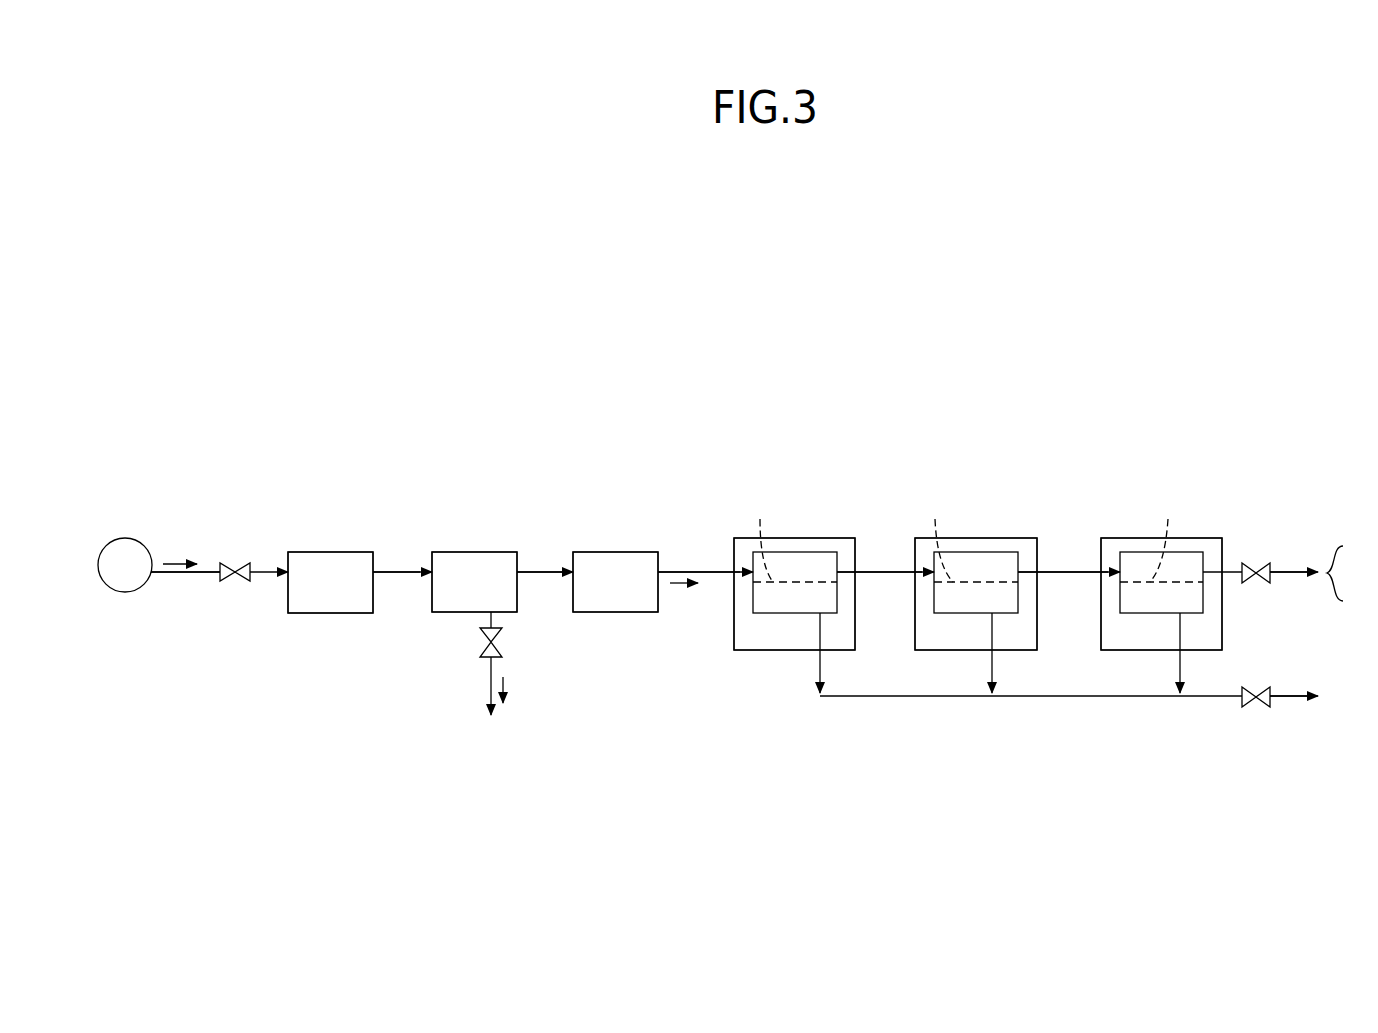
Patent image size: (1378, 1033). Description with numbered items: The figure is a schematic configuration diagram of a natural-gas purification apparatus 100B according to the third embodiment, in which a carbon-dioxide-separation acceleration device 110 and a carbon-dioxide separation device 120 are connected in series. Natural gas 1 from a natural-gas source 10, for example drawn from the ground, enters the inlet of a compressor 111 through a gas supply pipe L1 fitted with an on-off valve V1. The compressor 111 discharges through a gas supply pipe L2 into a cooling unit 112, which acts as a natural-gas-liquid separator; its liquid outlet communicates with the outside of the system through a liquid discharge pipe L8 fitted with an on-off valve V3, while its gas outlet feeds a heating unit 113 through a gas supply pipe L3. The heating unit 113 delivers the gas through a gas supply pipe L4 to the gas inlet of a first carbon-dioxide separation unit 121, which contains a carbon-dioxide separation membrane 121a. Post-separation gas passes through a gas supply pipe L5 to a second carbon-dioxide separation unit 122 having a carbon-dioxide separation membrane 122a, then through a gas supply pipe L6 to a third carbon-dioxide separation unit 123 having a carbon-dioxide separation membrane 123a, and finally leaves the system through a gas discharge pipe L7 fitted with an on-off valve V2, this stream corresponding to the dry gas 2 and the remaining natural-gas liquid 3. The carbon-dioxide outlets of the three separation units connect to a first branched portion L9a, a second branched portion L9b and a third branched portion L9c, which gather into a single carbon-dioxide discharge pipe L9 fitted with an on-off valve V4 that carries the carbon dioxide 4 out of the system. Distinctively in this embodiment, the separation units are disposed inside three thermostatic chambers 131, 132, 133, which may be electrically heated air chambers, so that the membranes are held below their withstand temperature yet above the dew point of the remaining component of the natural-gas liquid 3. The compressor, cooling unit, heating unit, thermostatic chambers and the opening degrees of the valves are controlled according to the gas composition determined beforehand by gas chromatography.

The natural-gas purification apparatus 100B is at (1205, 393).
The natural-gas source 10 is at (100, 550).
The natural gas 1 is at (127, 550).
The dry gas 2 is at (683, 590).
The natural-gas liquid 3 is at (507, 677).
The carbon dioxide 4 is at (1329, 700).
The carbon-dioxide-separation acceleration device 110 is at (522, 502).
The compressor 111 is at (335, 550).
The cooling unit 112 is at (482, 550).
The heating unit 113 is at (625, 550).
The carbon-dioxide separation device 120 is at (950, 452).
The first carbon-dioxide separation unit 121 is at (805, 552).
The carbon-dioxide separation membrane 121a is at (761, 539).
The second carbon-dioxide separation unit 122 is at (987, 552).
The carbon-dioxide separation membrane 122a is at (941, 539).
The third carbon-dioxide separation unit 123 is at (1135, 552).
The carbon-dioxide separation membrane 123a is at (1177, 539).
The thermostatic chamber 131 is at (837, 538).
The thermostatic chamber 132 is at (1038, 537).
The thermostatic chamber 133 is at (1213, 538).
The gas supply pipe L1 is at (212, 567).
The gas supply pipe L2 is at (400, 568).
The gas supply pipe L3 is at (550, 568).
The gas supply pipe L4 is at (697, 570).
The gas supply pipe L5 is at (883, 575).
The gas supply pipe L6 is at (1060, 577).
The gas discharge pipe L7 is at (1293, 580).
The liquid discharge pipe L8 is at (488, 687).
The carbon-dioxide discharge pipe L9 is at (1293, 702).
The first branched portion L9a is at (815, 668).
The second branched portion L9b is at (997, 668).
The third branched portion L9c is at (1175, 677).
The on-off valve V1 is at (243, 583).
The on-off valve V2 is at (1257, 583).
The on-off valve V3 is at (482, 648).
The on-off valve V4 is at (1258, 707).